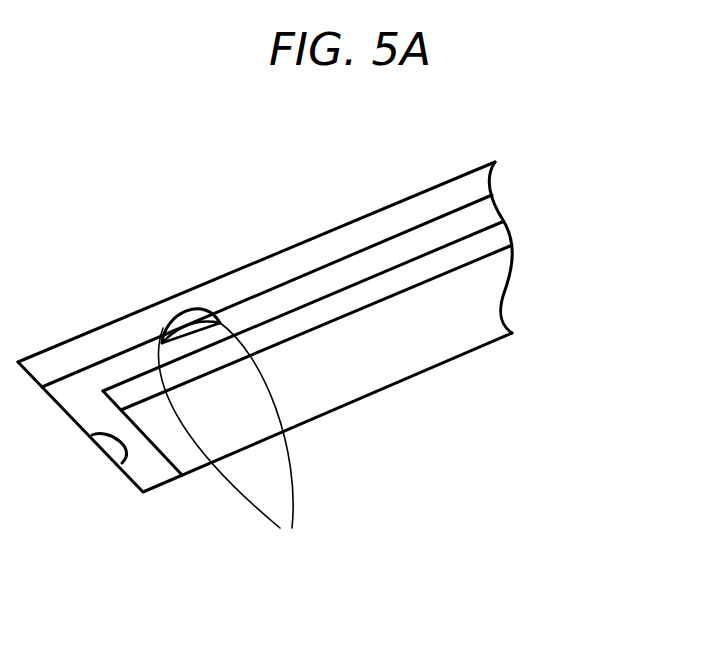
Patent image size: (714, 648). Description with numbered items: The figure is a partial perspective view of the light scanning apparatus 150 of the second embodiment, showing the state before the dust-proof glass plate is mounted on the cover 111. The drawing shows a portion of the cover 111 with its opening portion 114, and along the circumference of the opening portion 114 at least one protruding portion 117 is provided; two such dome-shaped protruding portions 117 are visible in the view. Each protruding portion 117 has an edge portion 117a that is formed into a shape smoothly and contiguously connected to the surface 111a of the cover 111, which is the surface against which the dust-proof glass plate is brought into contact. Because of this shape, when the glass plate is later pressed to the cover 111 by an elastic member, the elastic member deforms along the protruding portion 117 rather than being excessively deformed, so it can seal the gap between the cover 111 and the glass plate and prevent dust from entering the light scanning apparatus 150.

The light scanning apparatus 150 is at (528, 160).
The cover 111 is at (328, 245).
The surface of the cover 111a is at (405, 248).
The opening portion 114 is at (295, 398).
The protruding portion 117 is at (105, 442).
The edge portion 117a is at (242, 445).